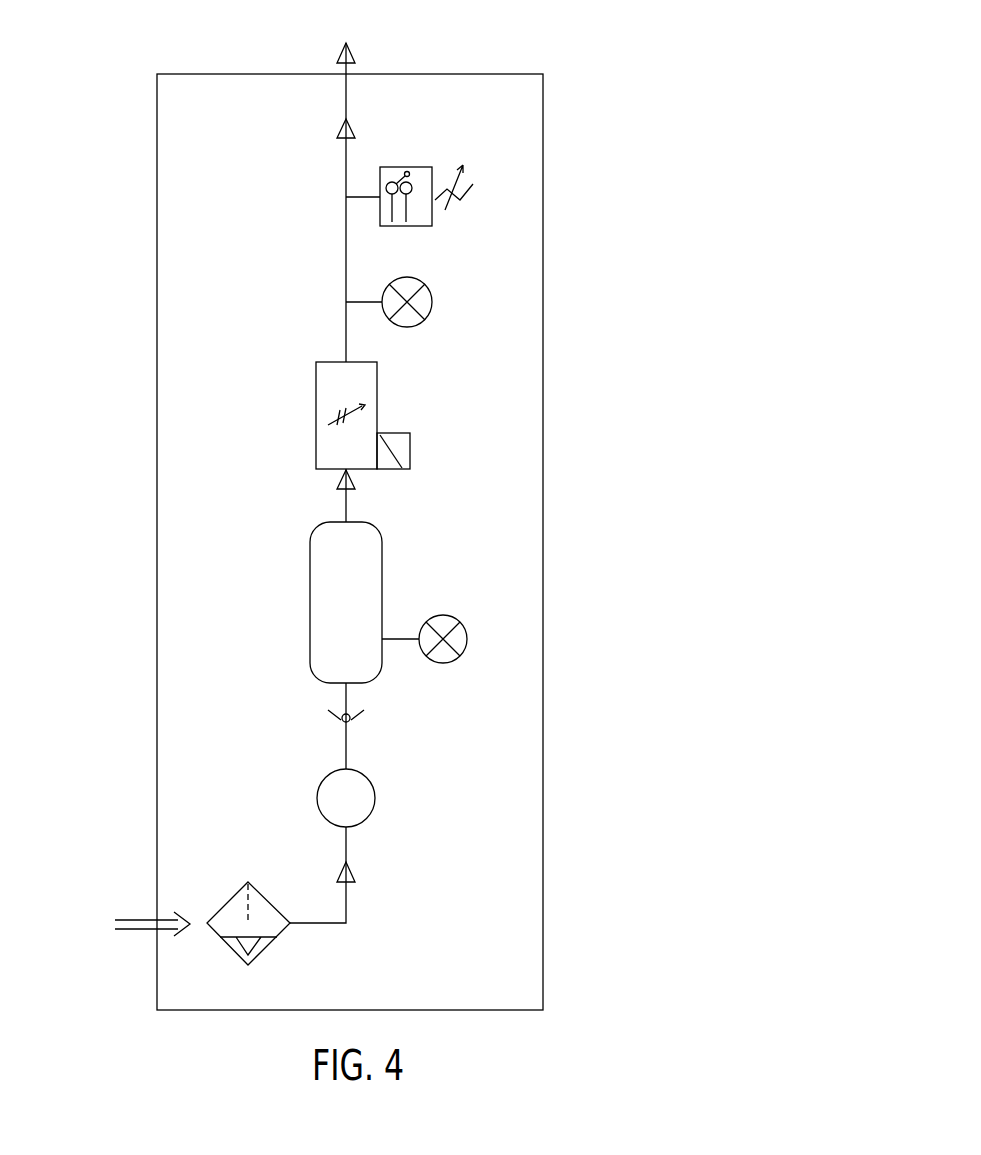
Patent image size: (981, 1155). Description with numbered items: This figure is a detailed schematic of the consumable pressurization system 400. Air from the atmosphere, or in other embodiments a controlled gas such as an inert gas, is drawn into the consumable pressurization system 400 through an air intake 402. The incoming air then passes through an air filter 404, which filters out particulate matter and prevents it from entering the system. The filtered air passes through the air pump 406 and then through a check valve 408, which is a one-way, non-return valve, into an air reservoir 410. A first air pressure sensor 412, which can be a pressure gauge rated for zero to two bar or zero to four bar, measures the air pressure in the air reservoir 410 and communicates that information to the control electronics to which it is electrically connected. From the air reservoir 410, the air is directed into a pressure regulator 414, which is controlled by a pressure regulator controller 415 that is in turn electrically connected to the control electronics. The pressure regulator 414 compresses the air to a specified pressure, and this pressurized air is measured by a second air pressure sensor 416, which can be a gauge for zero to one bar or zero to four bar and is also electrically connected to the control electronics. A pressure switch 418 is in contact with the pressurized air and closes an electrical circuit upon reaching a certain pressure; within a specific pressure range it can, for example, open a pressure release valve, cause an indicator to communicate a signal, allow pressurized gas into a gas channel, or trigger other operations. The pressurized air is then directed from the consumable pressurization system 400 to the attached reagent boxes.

The consumable pressurization system 400 is at (617, 83).
The air intake 402 is at (121, 932).
The air filter 404 is at (262, 953).
The air pump 406 is at (375, 800).
The check valve 408 is at (360, 717).
The air reservoir 410 is at (310, 584).
The first air pressure sensor 412 is at (441, 615).
The pressure regulator 414 is at (316, 413).
The pressure regulator controller 415 is at (410, 452).
The second air pressure sensor 416 is at (433, 288).
The pressure switch 418 is at (418, 167).